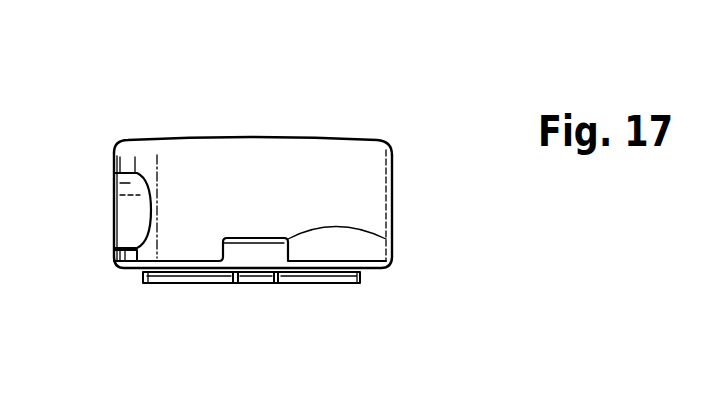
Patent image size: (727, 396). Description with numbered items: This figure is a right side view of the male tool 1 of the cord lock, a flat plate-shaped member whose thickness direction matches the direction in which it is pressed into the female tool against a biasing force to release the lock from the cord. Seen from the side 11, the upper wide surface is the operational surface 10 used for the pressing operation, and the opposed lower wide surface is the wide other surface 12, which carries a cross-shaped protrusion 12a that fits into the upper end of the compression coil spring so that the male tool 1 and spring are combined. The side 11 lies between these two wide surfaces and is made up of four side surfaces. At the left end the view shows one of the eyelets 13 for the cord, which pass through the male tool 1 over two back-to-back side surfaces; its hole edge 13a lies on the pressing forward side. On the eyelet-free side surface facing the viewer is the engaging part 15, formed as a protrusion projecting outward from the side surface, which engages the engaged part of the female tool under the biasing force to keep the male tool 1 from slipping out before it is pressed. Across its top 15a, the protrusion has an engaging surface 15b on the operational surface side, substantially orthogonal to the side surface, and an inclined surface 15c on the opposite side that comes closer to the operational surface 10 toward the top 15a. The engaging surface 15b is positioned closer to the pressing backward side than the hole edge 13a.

The male tool 1 is at (378, 141).
The operational surface 10 is at (283, 138).
The side 11 is at (259, 164).
The wide other surface 12 is at (317, 272).
The cross-shaped protrusion 12a is at (188, 276).
The eyelet 13 is at (133, 212).
The hole edge 13a is at (113, 253).
The engaging part 15 is at (262, 232).
The top 15a is at (388, 238).
The engaging surface 15b is at (239, 236).
The inclined surface 15c is at (257, 258).